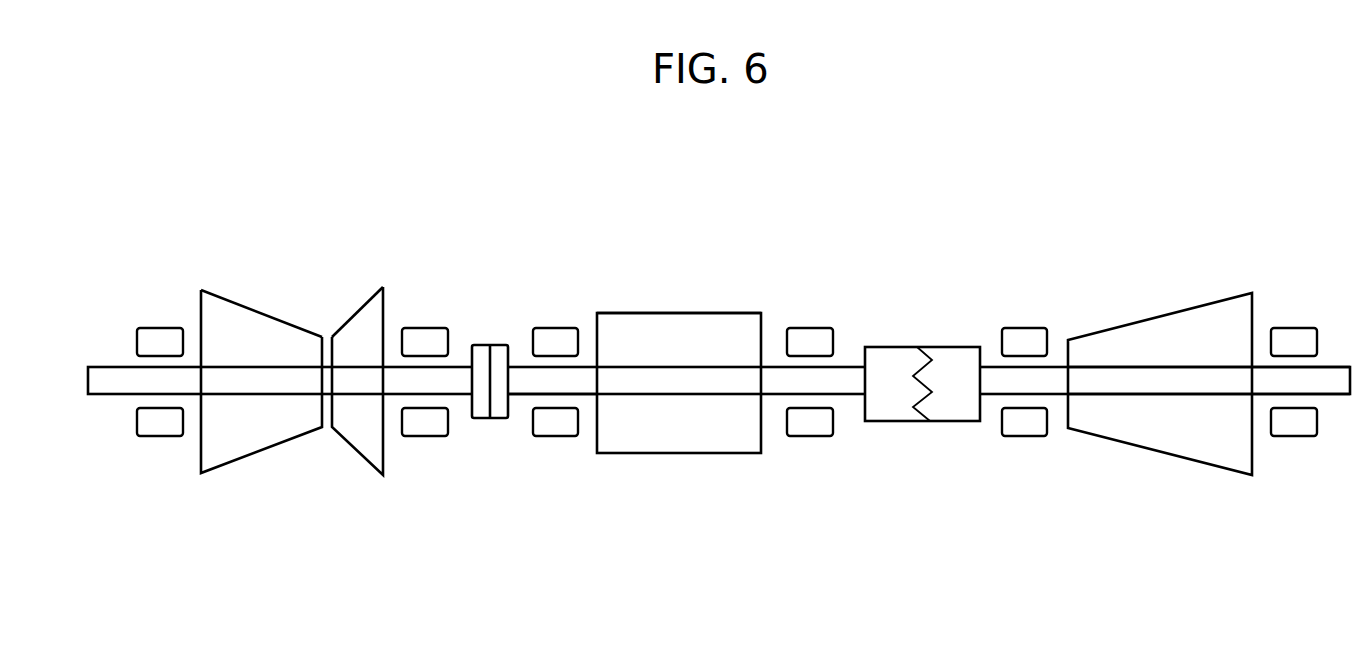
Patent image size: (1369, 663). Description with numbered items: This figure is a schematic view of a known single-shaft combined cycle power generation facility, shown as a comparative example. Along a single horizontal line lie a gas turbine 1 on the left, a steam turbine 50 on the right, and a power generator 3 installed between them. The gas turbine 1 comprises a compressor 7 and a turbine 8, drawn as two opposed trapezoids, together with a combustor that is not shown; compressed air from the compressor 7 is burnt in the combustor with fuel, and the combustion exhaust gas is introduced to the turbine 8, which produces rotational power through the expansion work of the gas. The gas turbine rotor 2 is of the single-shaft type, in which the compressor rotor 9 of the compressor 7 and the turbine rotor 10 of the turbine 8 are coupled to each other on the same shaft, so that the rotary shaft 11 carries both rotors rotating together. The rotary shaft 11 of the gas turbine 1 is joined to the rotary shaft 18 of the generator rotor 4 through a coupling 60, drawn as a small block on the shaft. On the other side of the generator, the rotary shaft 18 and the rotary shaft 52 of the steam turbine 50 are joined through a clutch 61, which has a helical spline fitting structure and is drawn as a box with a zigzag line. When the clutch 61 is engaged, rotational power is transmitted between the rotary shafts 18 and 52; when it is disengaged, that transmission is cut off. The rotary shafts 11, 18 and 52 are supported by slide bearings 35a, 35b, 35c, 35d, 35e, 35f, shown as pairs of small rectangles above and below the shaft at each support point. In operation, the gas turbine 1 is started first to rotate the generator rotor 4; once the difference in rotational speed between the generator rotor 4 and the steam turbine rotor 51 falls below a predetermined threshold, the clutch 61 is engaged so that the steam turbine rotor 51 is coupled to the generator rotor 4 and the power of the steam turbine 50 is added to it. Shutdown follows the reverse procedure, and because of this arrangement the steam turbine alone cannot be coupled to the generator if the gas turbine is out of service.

The gas turbine 1 is at (297, 303).
The gas turbine rotor 2 is at (297, 338).
The power generator 3 is at (679, 315).
The generator rotor 4 is at (711, 277).
The compressor 7 is at (253, 337).
The turbine 8 is at (370, 340).
The compressor rotor 9 is at (212, 285).
The turbine rotor 10 is at (357, 298).
The rotary shaft 11 is at (88, 379).
The rotary shaft 18 is at (517, 396).
The slide bearing 35a is at (153, 437).
The slide bearing 35b is at (422, 437).
The slide bearing 35c is at (567, 437).
The slide bearing 35d is at (807, 437).
The slide bearing 35e is at (1023, 437).
The slide bearing 35f is at (1293, 437).
The steam turbine 50 is at (1213, 350).
The steam turbine rotor 51 is at (1175, 313).
The rotary shaft 52 is at (1165, 396).
The coupling 60 is at (500, 344).
The clutch 61 is at (901, 347).